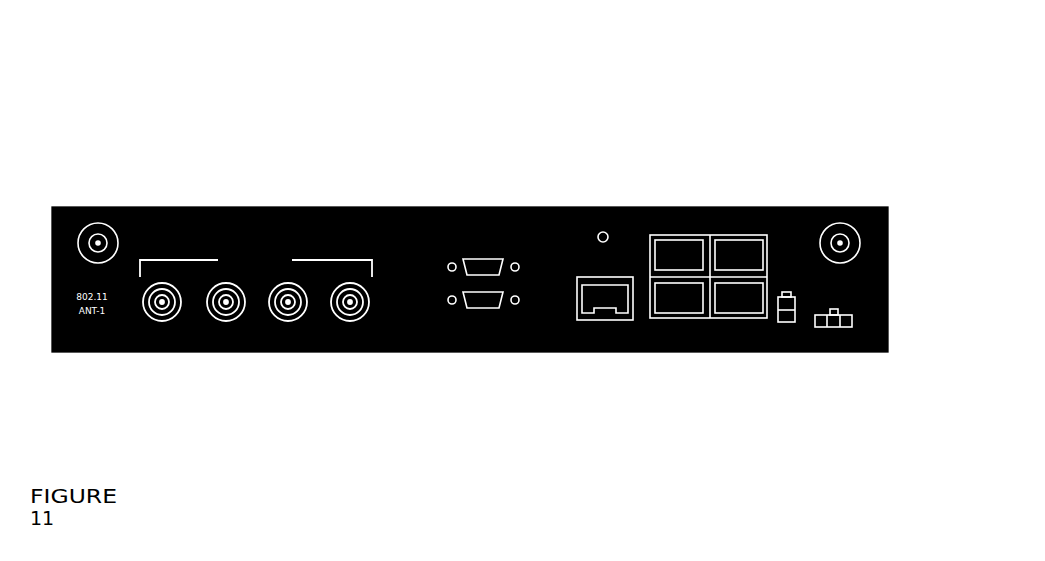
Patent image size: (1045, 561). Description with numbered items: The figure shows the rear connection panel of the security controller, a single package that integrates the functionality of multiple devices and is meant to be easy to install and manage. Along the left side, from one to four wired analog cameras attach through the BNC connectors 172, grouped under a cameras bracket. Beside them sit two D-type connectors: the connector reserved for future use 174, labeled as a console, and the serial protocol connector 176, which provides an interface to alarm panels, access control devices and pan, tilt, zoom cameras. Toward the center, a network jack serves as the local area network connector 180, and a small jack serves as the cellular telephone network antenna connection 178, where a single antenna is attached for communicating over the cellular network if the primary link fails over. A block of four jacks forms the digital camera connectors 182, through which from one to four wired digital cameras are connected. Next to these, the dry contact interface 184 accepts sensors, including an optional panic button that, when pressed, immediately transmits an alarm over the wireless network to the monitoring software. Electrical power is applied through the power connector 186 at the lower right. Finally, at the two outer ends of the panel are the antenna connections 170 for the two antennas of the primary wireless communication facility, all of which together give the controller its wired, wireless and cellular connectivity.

The antenna connections for primary wireless communication facility 170 is at (86, 229).
The BNC connectors 172 is at (212, 288).
The connector reserved for future use 174 is at (483, 258).
The EIA RS-485 protocol connector 176 is at (473, 285).
The cellular telephone network antenna connection 178 is at (600, 233).
The RJ-45 connector for local area network 180 is at (603, 330).
The RJ-45 connectors for digital cameras 182 is at (707, 318).
The dry contact interface 184 is at (783, 335).
The power connector 186 is at (830, 332).